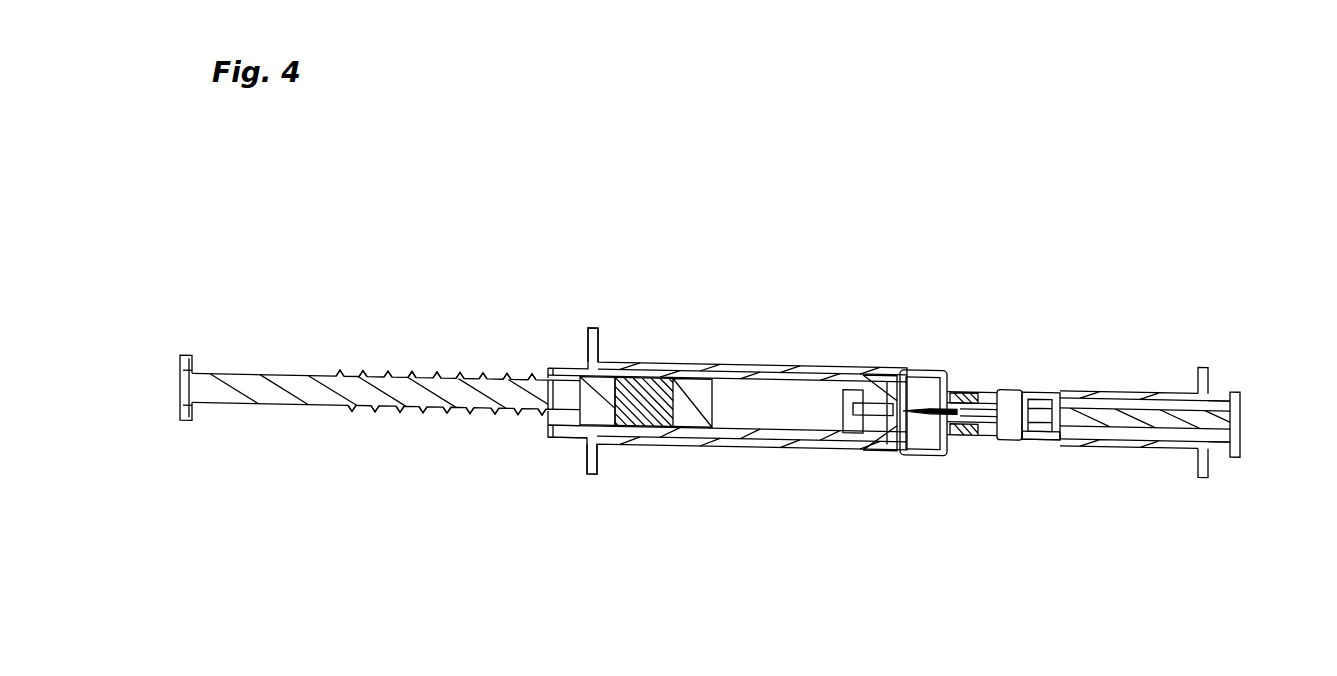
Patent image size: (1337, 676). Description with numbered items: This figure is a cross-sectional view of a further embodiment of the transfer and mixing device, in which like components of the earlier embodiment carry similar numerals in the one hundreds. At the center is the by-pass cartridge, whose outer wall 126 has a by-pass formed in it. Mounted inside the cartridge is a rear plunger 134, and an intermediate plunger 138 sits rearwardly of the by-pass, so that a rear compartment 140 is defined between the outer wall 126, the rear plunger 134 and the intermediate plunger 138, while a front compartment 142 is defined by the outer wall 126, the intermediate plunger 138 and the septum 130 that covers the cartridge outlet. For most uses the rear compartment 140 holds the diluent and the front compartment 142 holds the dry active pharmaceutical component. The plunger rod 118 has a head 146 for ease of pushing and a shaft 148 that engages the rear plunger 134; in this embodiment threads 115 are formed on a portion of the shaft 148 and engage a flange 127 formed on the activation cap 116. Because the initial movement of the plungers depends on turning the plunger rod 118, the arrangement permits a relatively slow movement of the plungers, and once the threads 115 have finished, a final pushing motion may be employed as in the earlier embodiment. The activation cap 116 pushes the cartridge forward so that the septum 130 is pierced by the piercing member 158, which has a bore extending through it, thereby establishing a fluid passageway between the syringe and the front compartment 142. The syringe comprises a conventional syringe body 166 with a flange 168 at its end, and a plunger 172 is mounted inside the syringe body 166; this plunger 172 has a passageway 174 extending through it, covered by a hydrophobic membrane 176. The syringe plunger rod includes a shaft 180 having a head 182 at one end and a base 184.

The threads 115 is at (403, 419).
The activation cap 116 is at (572, 439).
The plunger rod 118 is at (283, 368).
The outer wall 126 is at (793, 378).
The flange 127 is at (546, 375).
The septum 130 is at (877, 420).
The rear plunger 134 is at (605, 392).
The intermediate plunger 138 is at (708, 423).
The rear compartment 140 is at (655, 414).
The front compartment 142 is at (807, 422).
The head 146 is at (182, 433).
The shaft 148 is at (278, 401).
The piercing member 158 is at (927, 398).
The syringe body 166 is at (1110, 382).
The flange 168 is at (1208, 362).
The plunger 172 is at (1038, 429).
The passageway 174 is at (1042, 411).
The hydrophobic membrane 176 is at (1023, 409).
The shaft 180 is at (1157, 409).
The head 182 is at (1240, 433).
The base 184 is at (1065, 426).